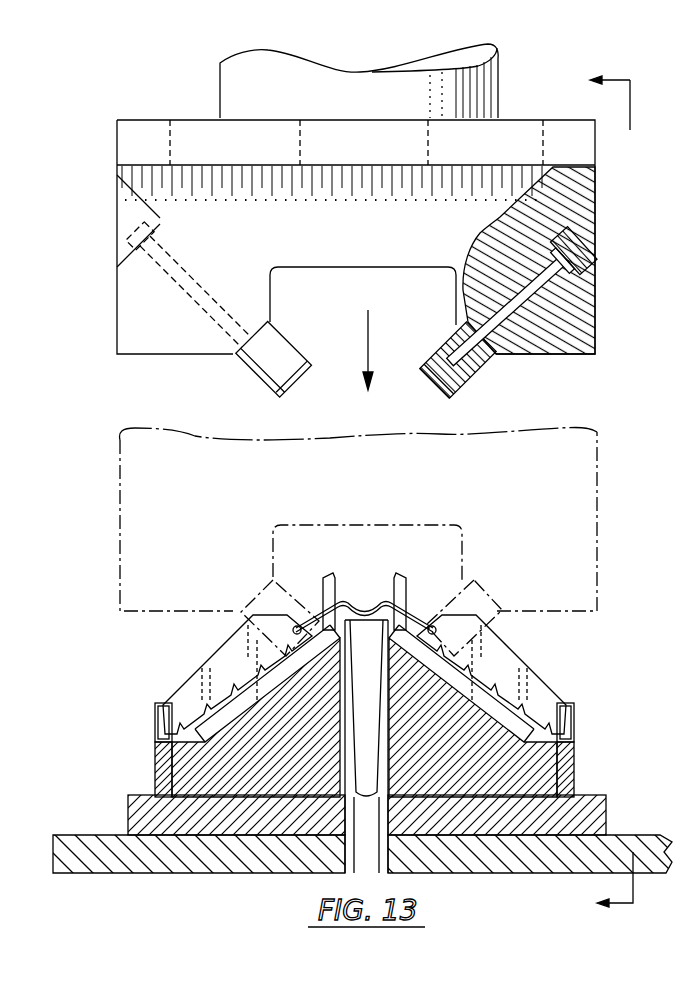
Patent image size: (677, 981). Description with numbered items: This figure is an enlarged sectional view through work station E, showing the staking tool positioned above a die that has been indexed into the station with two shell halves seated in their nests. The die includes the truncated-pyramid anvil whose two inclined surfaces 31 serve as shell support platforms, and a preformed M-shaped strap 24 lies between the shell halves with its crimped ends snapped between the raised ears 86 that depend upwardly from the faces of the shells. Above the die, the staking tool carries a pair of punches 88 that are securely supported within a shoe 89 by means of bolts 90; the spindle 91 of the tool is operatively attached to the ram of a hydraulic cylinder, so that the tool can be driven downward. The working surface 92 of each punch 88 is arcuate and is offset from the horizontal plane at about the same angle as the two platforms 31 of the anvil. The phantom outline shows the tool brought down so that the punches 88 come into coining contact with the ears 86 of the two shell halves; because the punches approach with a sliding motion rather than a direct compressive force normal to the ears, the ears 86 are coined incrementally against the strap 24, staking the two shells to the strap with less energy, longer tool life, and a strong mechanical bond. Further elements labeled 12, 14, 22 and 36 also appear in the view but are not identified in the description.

The lower die assembly 12 is at (588, 712).
The section line 14 is at (593, 496).
The side retainer wall 22 is at (537, 710).
The preformed strap 24 is at (355, 597).
The inclined surface 31 is at (267, 684).
The wedge block 36 is at (230, 662).
The raised ear 86 is at (463, 597).
The punch 88 is at (265, 380).
The shoe 89 is at (588, 308).
The bolt 90 is at (590, 238).
The spindle 91 is at (483, 82).
The working surface 92 is at (433, 382).